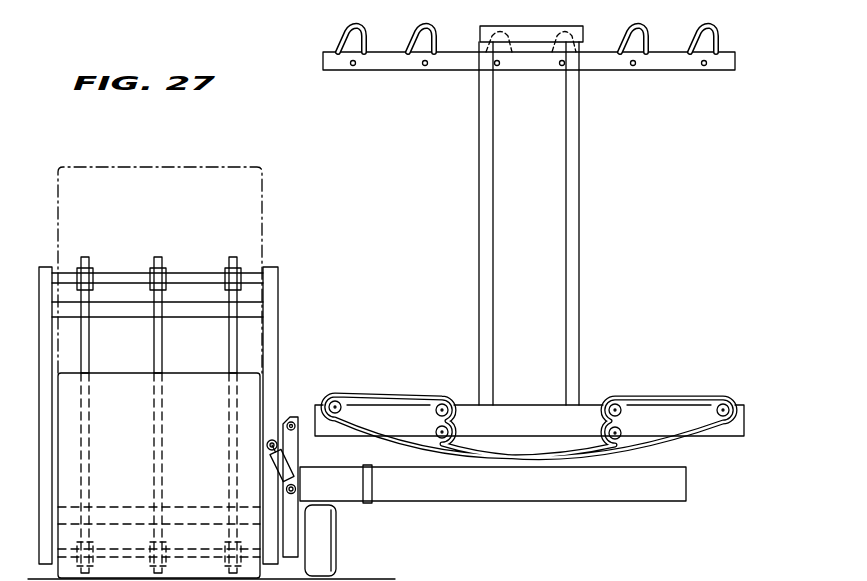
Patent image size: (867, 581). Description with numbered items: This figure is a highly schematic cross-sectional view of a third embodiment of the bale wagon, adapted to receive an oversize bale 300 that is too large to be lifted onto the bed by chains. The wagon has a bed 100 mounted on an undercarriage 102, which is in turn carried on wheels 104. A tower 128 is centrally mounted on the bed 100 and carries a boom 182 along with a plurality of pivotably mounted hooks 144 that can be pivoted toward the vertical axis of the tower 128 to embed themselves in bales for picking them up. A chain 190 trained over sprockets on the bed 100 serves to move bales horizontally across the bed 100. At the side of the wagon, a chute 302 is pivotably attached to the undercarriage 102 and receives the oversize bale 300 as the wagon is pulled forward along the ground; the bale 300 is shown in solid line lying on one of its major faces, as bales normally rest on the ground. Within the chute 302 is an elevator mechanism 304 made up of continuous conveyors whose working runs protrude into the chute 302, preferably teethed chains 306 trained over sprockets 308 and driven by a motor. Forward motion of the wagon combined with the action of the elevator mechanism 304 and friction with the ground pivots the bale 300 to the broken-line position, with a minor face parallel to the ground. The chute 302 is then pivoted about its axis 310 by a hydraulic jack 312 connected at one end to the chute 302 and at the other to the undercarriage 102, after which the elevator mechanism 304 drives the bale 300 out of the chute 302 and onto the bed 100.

The bed 100 is at (597, 407).
The undercarriage 102 is at (686, 487).
The wheels 104 is at (322, 532).
The tower 128 is at (580, 170).
The hooks 144 is at (719, 40).
The boom 182 is at (661, 71).
The chain 190 is at (678, 443).
The oversize bale 300 is at (105, 382).
The chute 302 is at (47, 448).
The elevator mechanism 304 is at (170, 267).
The teethed chains 306 is at (162, 345).
The sprockets 308 is at (92, 268).
The axis 310 is at (292, 418).
The hydraulic jack 312 is at (286, 466).